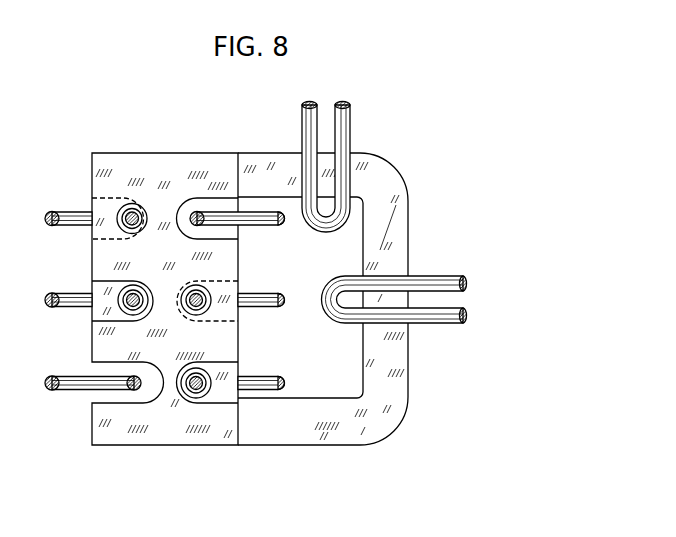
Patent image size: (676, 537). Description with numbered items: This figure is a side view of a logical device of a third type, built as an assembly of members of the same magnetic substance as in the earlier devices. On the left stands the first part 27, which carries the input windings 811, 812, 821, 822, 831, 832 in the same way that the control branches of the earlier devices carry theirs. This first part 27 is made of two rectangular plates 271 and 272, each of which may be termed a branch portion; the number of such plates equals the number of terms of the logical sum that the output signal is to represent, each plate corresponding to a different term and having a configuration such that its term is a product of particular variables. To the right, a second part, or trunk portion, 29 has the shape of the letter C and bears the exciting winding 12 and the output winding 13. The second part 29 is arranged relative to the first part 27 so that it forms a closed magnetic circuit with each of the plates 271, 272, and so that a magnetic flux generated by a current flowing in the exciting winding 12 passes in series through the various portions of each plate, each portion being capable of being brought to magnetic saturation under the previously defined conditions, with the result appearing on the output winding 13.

The first part 27 is at (122, 145).
The rectangular plate 271 is at (140, 158).
The rectangular plate 272 is at (188, 158).
The second part 29 is at (368, 150).
The exciting winding 12 is at (307, 133).
The output winding 13 is at (438, 278).
The input winding 811 is at (65, 211).
The input winding 812 is at (259, 224).
The input winding 821 is at (70, 297).
The input winding 822 is at (262, 293).
The input winding 831 is at (70, 379).
The input winding 832 is at (262, 377).